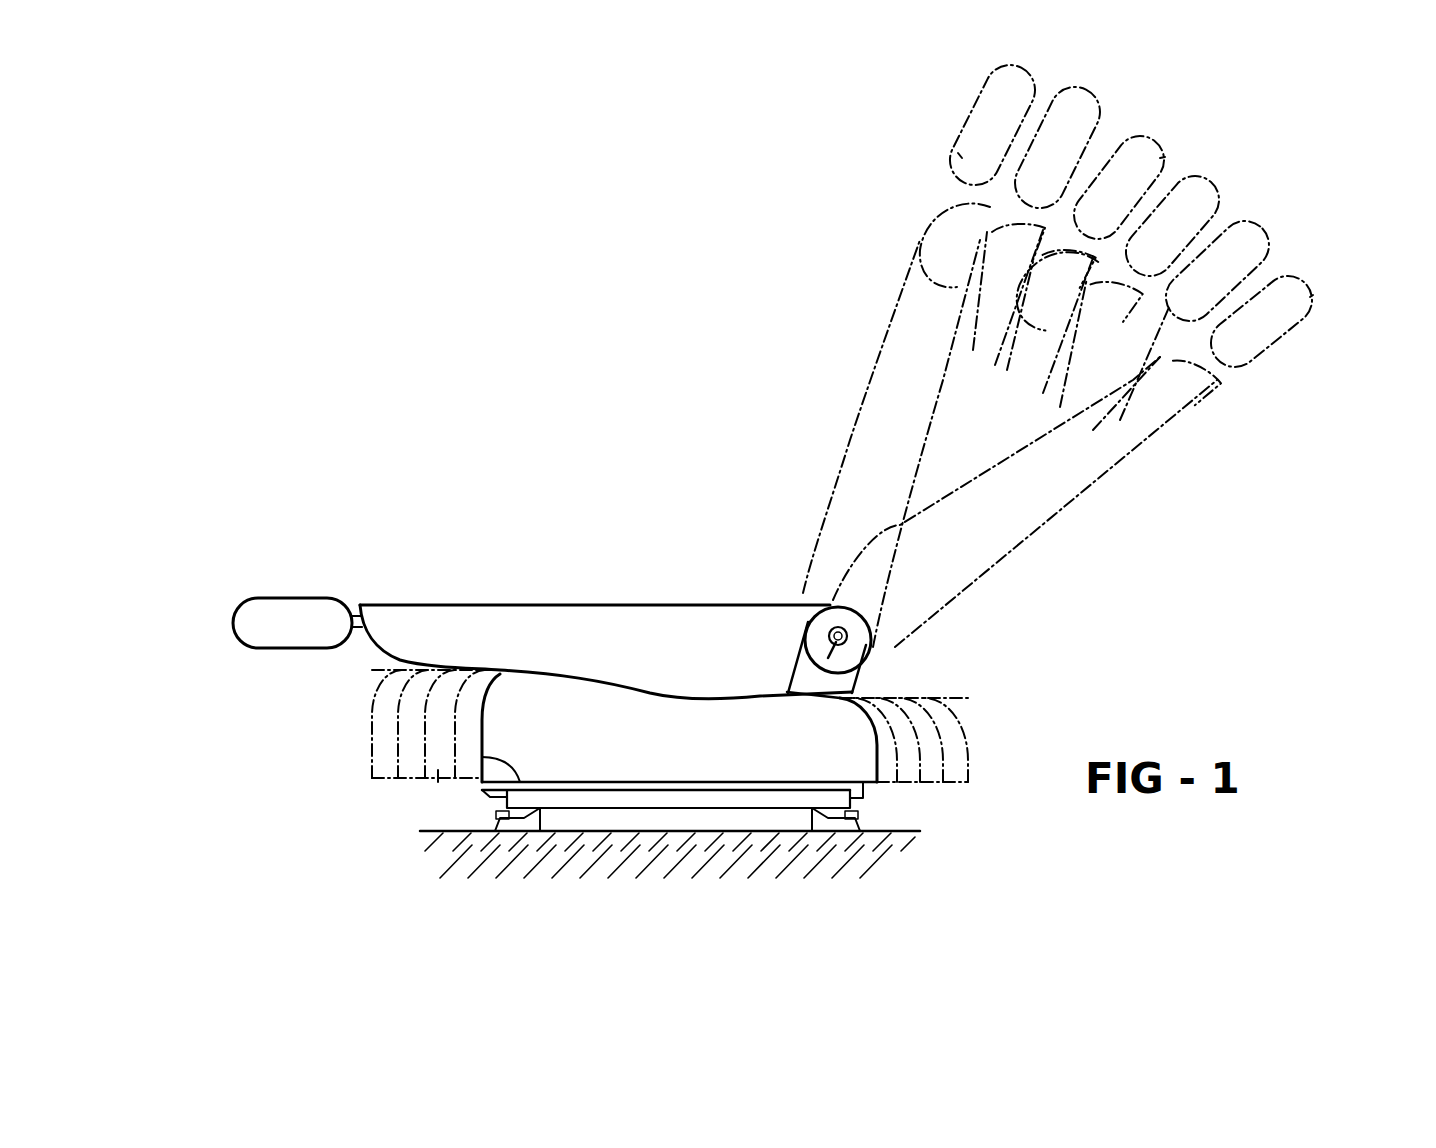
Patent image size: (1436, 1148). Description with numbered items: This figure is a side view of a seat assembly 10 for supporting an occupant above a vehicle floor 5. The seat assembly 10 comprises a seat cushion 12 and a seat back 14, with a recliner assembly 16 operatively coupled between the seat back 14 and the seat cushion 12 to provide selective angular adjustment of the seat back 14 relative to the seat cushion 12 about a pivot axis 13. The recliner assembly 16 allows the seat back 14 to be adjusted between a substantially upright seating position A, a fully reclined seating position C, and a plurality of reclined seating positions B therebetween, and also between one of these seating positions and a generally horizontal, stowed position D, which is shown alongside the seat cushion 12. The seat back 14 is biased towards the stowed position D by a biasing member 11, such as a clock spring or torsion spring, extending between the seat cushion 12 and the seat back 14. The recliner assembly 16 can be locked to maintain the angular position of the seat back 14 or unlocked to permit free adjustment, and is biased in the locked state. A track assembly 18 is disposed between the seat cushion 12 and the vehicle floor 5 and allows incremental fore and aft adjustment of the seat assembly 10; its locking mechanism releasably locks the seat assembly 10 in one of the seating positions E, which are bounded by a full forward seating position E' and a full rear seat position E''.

The seat assembly 10 is at (645, 430).
The seat back 14 is at (502, 614).
The pivot axis 13 is at (805, 630).
The biasing member 11 is at (840, 643).
The recliner assembly 16 is at (860, 655).
The seat cushion 12 is at (370, 712).
The track assembly 18 is at (810, 804).
The vehicle floor 5 is at (887, 832).
The substantially upright seating position A is at (958, 153).
The reclined seating positions B is at (1165, 157).
The fully reclined seating position C is at (1313, 295).
The stowed position D is at (250, 624).
The seating positions E is at (467, 841).
The full forward seating position E' is at (317, 812).
The full rear seat position E'' is at (529, 826).